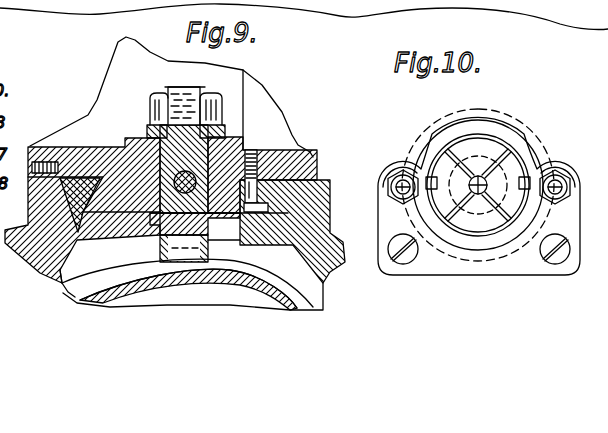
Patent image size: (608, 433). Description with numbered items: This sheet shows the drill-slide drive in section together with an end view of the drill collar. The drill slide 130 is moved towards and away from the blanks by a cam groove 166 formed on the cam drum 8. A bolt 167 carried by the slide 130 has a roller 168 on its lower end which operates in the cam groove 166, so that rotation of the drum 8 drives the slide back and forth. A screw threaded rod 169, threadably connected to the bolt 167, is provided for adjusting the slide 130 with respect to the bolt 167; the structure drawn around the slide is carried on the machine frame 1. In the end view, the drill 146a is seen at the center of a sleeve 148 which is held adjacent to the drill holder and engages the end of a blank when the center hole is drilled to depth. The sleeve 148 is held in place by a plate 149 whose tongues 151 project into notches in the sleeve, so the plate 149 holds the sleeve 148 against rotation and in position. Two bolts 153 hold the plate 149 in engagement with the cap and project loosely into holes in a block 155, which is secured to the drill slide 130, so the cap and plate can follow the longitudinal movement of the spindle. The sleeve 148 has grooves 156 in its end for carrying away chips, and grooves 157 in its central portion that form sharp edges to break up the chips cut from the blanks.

In FIG. 9, the casing 1 is at (346, 271).
In FIG. 9, the cam drum 8 is at (67, 293).
In FIG. 9, the drill slide 130 is at (325, 157).
In FIG. 9, the cam groove 166 is at (125, 262).
In FIG. 9, the bolt 167 is at (177, 87).
In FIG. 9, the roller 168 is at (208, 247).
In FIG. 9, the screw threaded rod 169 is at (238, 147).
In FIG. 10, the drill 146a is at (473, 197).
In FIG. 10, the sleeve 148 is at (493, 223).
In FIG. 10, the plate 149 is at (533, 153).
In FIG. 10, the tongues 151 is at (420, 150).
In FIG. 10, the bolts 153 is at (393, 185).
In FIG. 10, the block 155 is at (480, 268).
In FIG. 10, the grooves 156 is at (448, 137).
In FIG. 10, the grooves 157 is at (477, 163).